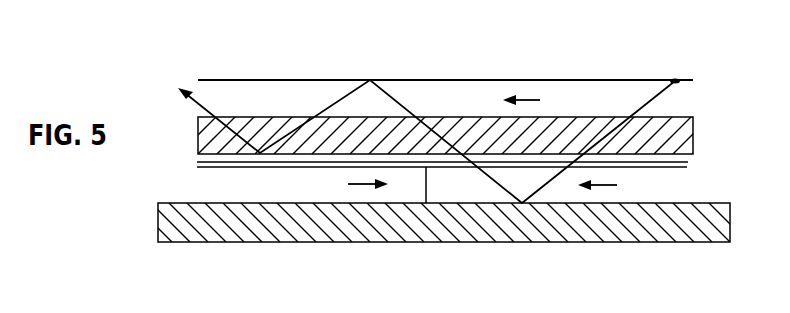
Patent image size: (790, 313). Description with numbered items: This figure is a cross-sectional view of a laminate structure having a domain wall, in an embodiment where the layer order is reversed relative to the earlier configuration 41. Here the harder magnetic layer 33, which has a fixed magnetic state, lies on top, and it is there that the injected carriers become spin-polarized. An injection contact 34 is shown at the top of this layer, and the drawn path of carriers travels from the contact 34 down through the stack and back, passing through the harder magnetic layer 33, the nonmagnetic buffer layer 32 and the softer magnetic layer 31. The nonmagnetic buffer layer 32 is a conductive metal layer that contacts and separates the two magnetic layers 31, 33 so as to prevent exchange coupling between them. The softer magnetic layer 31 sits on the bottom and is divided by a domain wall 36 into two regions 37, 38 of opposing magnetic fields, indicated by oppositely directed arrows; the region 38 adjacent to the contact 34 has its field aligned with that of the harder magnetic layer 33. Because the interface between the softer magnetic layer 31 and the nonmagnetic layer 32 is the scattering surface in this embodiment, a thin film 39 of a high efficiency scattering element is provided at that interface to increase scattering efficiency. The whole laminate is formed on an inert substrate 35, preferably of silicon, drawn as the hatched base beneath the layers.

The softer magnetic layer 31 is at (442, 182).
The nonmagnetic buffer layer 32 is at (446, 134).
The harder magnetic layer 33 is at (445, 97).
The injection contact 34 is at (672, 78).
The inert substrate 35 is at (439, 221).
The domain wall 36 is at (427, 190).
The region 37 is at (345, 186).
The region 38 is at (620, 189).
The thin film 39 is at (688, 162).
The configuration 41 is at (252, 64).